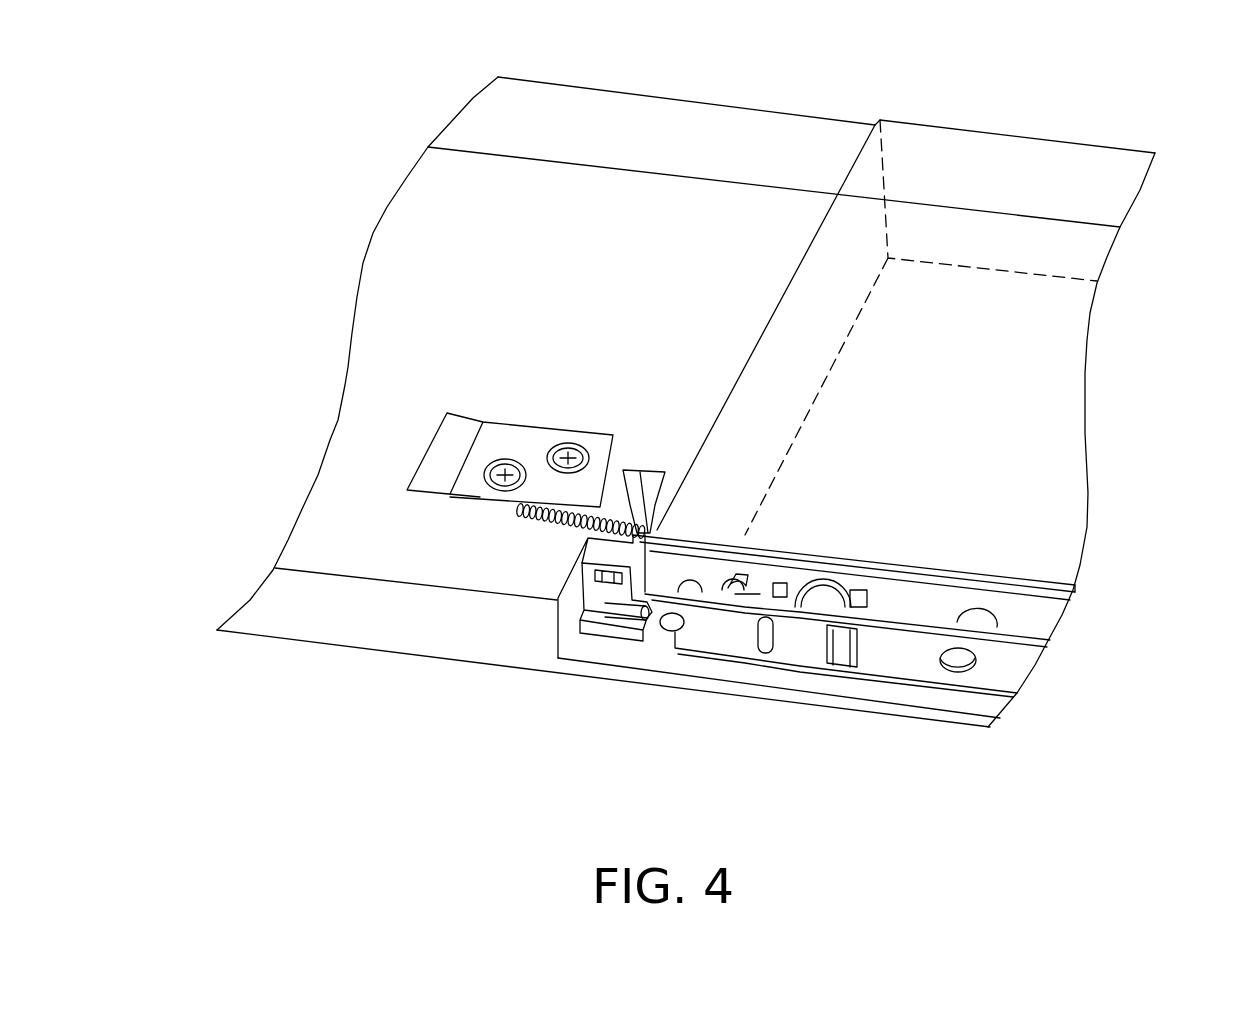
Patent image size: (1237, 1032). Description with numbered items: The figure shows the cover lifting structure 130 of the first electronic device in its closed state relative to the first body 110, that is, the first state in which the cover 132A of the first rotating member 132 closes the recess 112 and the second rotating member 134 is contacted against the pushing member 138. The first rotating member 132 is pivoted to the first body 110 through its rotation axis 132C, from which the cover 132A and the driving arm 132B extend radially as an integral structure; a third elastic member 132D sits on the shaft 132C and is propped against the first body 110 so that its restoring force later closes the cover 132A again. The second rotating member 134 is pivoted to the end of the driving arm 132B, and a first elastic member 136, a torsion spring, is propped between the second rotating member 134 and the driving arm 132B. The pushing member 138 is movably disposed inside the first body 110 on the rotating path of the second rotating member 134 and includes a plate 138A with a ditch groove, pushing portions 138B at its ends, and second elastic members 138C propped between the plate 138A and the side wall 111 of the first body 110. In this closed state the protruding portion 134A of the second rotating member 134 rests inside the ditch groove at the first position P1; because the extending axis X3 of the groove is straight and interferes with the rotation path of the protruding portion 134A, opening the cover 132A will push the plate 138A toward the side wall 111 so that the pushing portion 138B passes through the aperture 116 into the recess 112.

The first body 110 is at (685, 107).
The side wall 111 is at (943, 600).
The recess 112 is at (1013, 368).
The aperture 116 is at (737, 556).
The cover lifting structure 130 is at (477, 803).
The first rotating member 132 is at (215, 347).
The cover 132A is at (738, 443).
The driving arm 132B is at (582, 564).
The rotation axis 132C is at (653, 527).
The third elastic member 132D is at (520, 517).
The second rotating member 134 is at (613, 598).
The protruding portion 134A is at (630, 600).
The first elastic member 136 is at (603, 580).
The pushing member 138 is at (863, 752).
The plate 138A is at (718, 635).
The pushing portion 138B is at (740, 587).
The second elastic member 138C is at (828, 583).
The first position P1 is at (658, 569).
The extending axis X3 is at (525, 617).